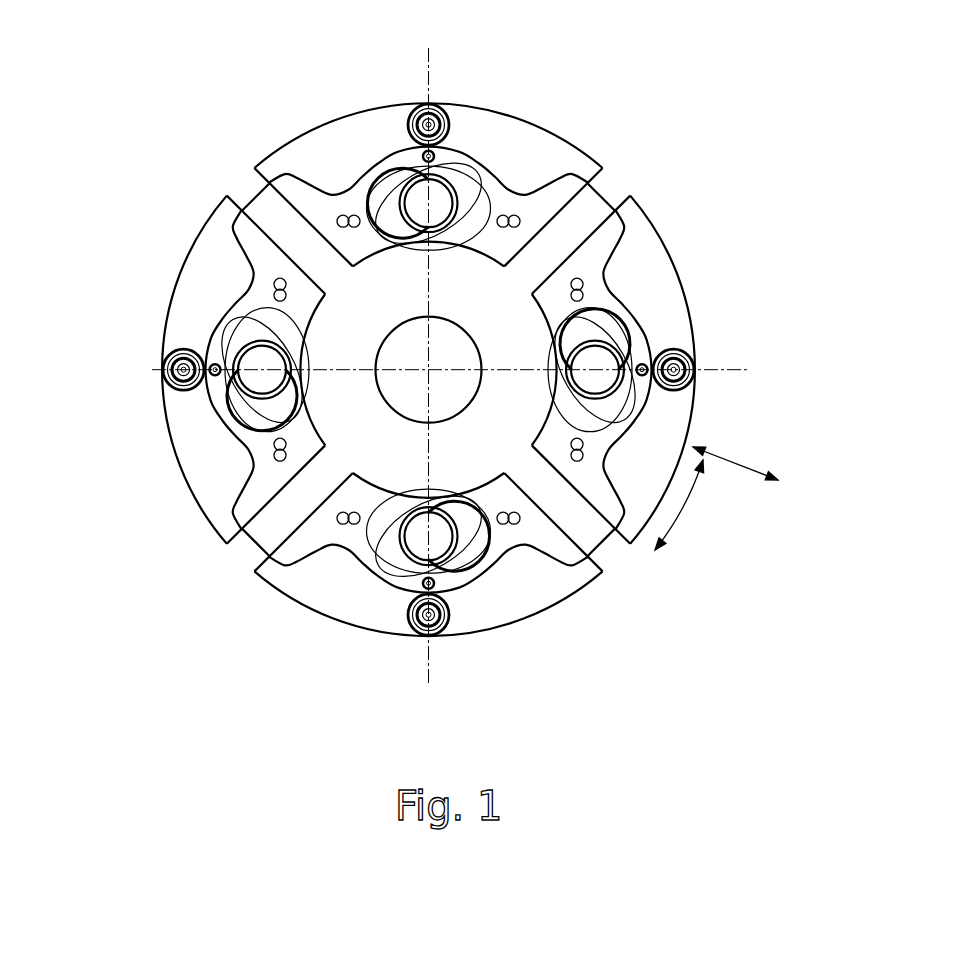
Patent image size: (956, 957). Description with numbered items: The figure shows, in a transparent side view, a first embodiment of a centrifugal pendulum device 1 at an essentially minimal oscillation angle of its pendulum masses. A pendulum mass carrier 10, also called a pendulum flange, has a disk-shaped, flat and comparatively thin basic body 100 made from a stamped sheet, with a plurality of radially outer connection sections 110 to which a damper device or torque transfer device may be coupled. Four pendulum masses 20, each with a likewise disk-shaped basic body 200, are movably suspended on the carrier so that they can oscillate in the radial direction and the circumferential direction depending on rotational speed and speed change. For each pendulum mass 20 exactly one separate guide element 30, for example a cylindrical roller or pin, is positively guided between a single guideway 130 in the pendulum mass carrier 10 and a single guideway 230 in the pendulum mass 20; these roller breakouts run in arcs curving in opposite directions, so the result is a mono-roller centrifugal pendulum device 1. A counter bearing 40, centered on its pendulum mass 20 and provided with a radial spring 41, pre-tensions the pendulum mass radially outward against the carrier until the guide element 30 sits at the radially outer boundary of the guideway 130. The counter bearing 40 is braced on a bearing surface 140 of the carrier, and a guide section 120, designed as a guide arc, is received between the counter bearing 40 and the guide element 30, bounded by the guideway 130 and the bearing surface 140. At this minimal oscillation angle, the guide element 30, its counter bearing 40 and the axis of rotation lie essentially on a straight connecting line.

The centrifugal pendulum device 1 is at (700, 100).
The pendulum mass carrier 10 is at (240, 180).
The pendulum mass 20 is at (334, 105).
The guide element 30 is at (437, 538).
The counter bearing 40 is at (433, 102).
The radial spring 41 is at (413, 104).
The basic body 100 is at (390, 451).
The radially outer connection section 110 is at (597, 207).
The guide section 120 is at (642, 347).
The guideway 130 is at (516, 216).
The bearing surface 140 is at (643, 320).
The basic body 200 is at (675, 422).
The guideway 230 is at (455, 162).